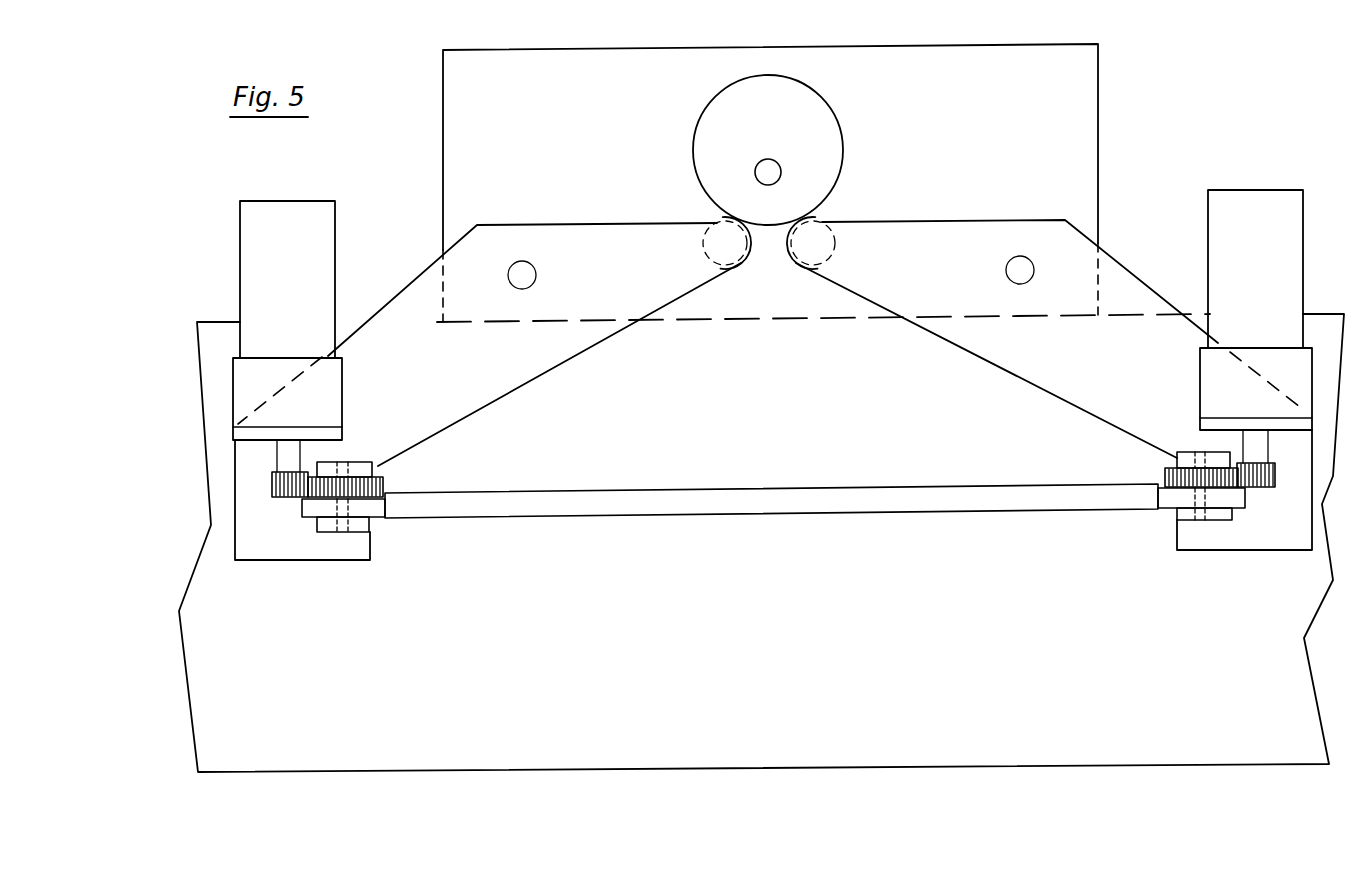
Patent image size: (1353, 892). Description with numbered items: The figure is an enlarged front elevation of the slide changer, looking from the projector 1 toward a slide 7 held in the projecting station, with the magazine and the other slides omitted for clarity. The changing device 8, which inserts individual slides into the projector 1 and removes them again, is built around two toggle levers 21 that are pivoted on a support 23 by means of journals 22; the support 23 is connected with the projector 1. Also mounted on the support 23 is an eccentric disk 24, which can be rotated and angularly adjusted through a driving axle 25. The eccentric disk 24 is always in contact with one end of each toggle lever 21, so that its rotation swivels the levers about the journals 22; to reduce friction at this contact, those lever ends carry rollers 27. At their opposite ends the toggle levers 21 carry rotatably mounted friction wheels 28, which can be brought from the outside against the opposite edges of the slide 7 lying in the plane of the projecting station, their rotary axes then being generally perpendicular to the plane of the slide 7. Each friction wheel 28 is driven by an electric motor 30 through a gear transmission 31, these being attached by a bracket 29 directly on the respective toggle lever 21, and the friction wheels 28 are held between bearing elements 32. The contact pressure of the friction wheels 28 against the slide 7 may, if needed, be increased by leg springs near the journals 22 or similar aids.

The projector 1 is at (889, 646).
The slide 7 is at (690, 503).
The changing device 8 is at (909, 222).
The toggle lever 21 is at (512, 370).
The journal 22 is at (522, 262).
The support 23 is at (1080, 120).
The eccentric disk 24 is at (818, 122).
The driving axle 25 is at (758, 172).
The roller 27 is at (797, 268).
The friction wheel 28 is at (303, 510).
The bracket 29 is at (317, 432).
The electric motor 30 is at (320, 252).
The gear transmission 31 is at (298, 490).
The bearing element 32 is at (355, 468).